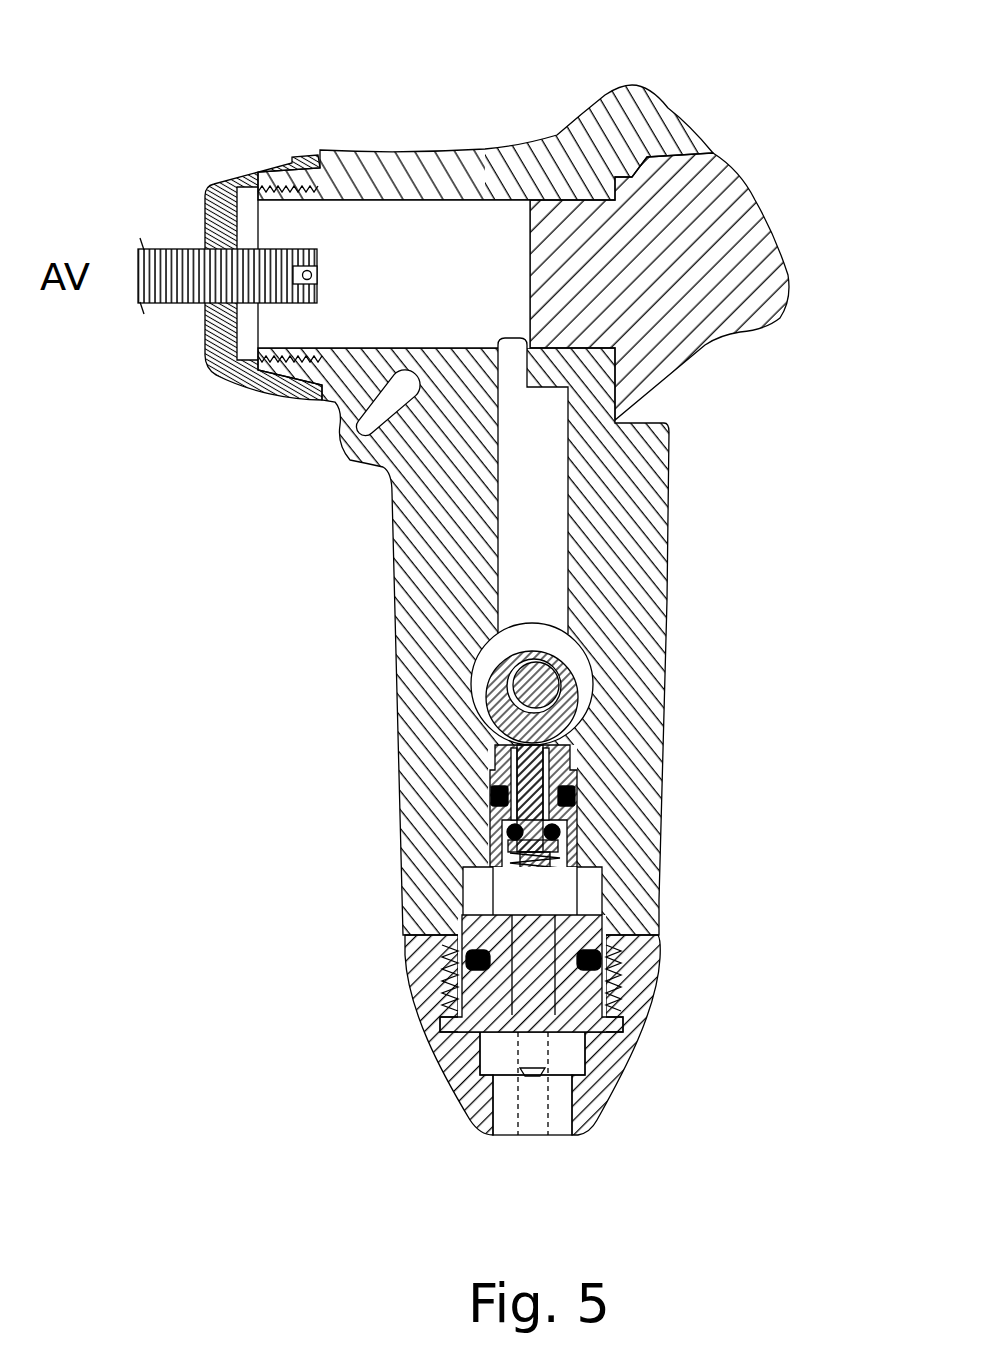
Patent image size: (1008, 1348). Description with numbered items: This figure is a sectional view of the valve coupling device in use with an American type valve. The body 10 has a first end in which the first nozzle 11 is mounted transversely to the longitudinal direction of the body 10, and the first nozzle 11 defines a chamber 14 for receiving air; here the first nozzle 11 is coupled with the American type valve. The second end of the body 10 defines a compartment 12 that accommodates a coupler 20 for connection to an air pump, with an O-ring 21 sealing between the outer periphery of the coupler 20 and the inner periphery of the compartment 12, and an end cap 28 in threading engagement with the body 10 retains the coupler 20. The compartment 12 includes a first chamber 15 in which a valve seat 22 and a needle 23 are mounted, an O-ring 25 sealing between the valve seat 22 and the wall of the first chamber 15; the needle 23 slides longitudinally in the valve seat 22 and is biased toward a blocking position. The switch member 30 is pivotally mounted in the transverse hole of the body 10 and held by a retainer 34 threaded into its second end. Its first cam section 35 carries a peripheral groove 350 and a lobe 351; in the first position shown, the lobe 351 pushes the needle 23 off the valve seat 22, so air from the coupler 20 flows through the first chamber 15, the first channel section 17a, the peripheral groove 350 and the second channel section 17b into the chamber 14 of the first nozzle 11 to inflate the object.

The body 10 is at (640, 125).
The first nozzle 11 is at (213, 222).
The chamber 14 is at (388, 222).
The second channel section 17b is at (527, 450).
The first channel section 17a is at (500, 747).
The switch member 30 is at (523, 769).
The peripheral groove 350 is at (572, 652).
The first cam section 35 is at (578, 723).
The retainer 34 is at (580, 683).
The lobe 351 is at (500, 731).
The valve seat 22 is at (578, 767).
The O-ring 25 is at (490, 797).
The needle 23 is at (578, 827).
The first chamber 15 is at (560, 858).
The compartment 12 is at (478, 883).
The coupler 20 is at (440, 990).
The O-ring 21 is at (602, 968).
The end cap 28 is at (455, 1068).